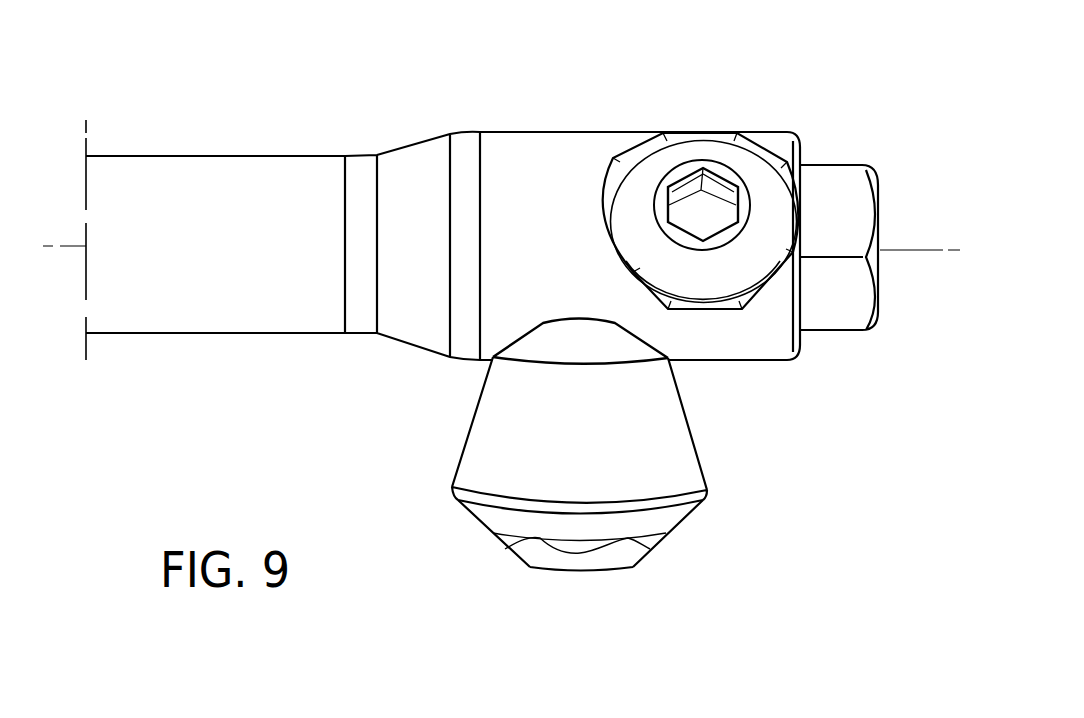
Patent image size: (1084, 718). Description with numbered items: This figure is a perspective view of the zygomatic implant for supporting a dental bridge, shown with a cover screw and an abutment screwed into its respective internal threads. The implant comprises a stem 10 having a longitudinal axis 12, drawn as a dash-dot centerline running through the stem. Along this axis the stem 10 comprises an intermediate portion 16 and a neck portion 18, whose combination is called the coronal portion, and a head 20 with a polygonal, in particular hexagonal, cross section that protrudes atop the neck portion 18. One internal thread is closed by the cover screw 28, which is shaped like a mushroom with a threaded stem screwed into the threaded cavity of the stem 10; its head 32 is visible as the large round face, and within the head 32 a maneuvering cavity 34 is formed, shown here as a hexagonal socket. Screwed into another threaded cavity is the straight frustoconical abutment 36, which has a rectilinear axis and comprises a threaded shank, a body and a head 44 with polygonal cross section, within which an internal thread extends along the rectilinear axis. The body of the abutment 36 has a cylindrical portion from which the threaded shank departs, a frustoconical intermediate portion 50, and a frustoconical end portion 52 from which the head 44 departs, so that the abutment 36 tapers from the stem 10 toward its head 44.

The stem 10 is at (243, 372).
The longitudinal axis 12 is at (915, 253).
The intermediate portion 16 is at (223, 187).
The neck portion 18 is at (507, 310).
The head 20 is at (838, 200).
The cover screw 28 is at (747, 258).
The head 32 is at (720, 153).
The maneuvering cavity 34 is at (687, 192).
The abutment 36 is at (455, 505).
The head 44 is at (615, 558).
The frustoconical intermediate portion 50 is at (673, 432).
The frustoconical end portion 52 is at (683, 517).